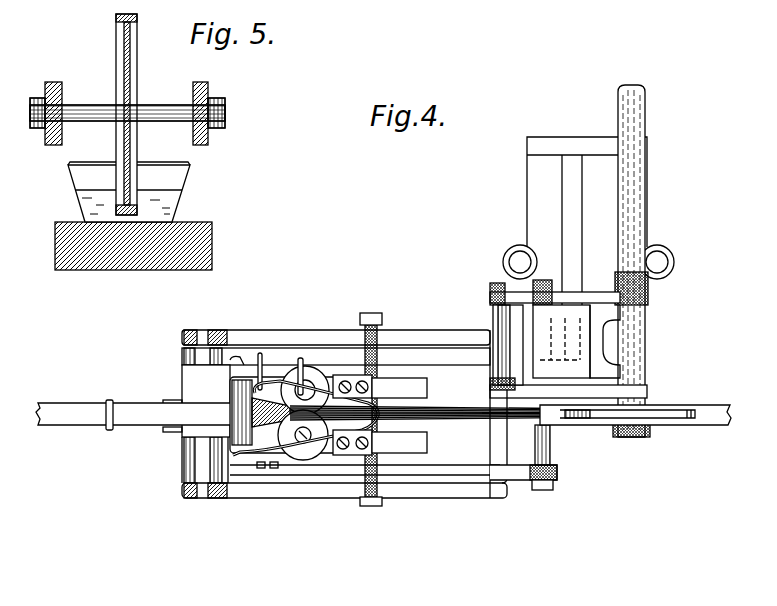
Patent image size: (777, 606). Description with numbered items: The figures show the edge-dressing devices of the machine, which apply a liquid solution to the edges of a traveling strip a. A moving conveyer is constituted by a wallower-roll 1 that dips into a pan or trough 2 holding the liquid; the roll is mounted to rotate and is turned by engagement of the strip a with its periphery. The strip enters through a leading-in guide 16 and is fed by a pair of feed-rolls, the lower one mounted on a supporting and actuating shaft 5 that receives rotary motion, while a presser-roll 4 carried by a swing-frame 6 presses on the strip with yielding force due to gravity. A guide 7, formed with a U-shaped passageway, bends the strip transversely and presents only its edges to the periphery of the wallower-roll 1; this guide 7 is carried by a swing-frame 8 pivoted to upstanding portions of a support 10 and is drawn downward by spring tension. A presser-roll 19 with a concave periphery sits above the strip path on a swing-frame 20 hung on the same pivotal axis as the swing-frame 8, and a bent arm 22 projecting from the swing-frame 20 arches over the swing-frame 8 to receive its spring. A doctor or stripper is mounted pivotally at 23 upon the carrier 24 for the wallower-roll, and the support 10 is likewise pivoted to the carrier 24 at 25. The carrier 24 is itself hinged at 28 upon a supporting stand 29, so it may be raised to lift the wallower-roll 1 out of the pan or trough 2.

In FIG. 5, the wallower-roll 1 is at (116, 45).
In FIG. 5, the pan or trough 2 is at (180, 200).
In FIG. 5, the carrier 24 is at (50, 145).
In FIG. 4, the carrier 24 is at (428, 493).
In FIG. 4, the presser-roll 4 is at (668, 415).
In FIG. 4, the supporting and actuating shaft 5 is at (632, 190).
In FIG. 4, the swing-frame 6 is at (590, 295).
In FIG. 4, the guide 7 is at (390, 410).
In FIG. 4, the swing-frame 8 is at (283, 465).
In FIG. 4, the support 10 is at (182, 378).
In FIG. 4, the leading-in guide 16 is at (110, 400).
In FIG. 4, the presser-roll 19 is at (330, 390).
In FIG. 4, the swing-frame 20 is at (272, 385).
In FIG. 4, the bent arm 22 is at (290, 370).
In FIG. 4, the pivot of doctor or stripper 23 is at (215, 455).
In FIG. 4, the pivot of support 25 is at (190, 445).
In FIG. 4, the pivot of carrier 28 is at (545, 488).
In FIG. 4, the supporting stand 29 is at (532, 190).
In FIG. 4, the strip a is at (477, 408).